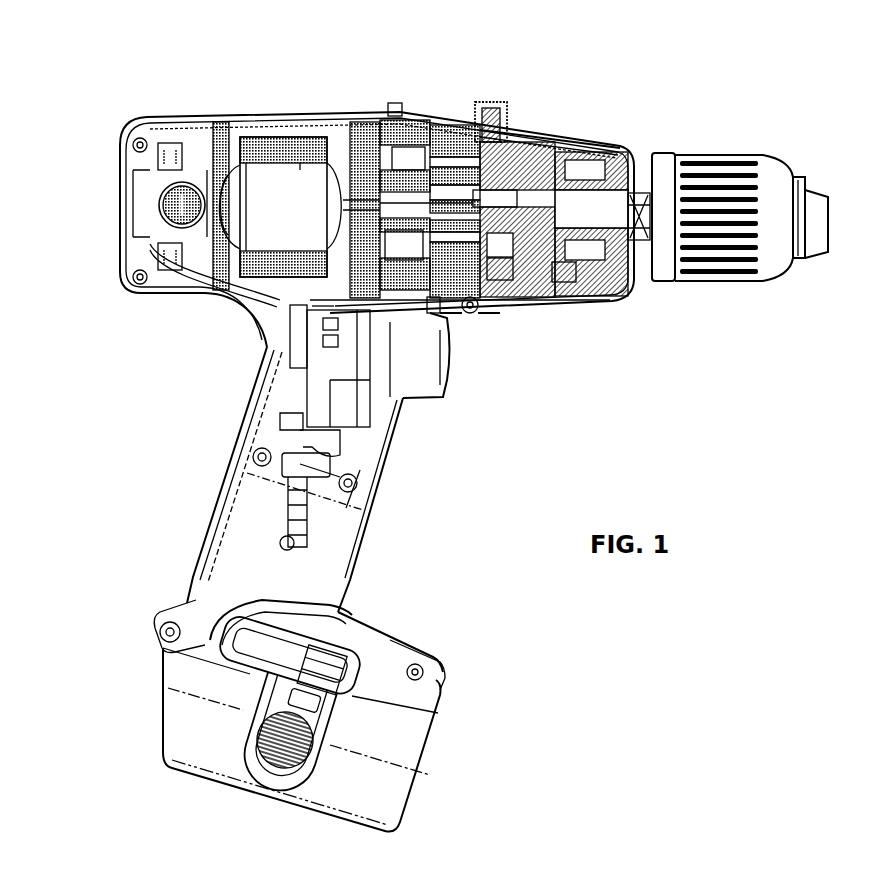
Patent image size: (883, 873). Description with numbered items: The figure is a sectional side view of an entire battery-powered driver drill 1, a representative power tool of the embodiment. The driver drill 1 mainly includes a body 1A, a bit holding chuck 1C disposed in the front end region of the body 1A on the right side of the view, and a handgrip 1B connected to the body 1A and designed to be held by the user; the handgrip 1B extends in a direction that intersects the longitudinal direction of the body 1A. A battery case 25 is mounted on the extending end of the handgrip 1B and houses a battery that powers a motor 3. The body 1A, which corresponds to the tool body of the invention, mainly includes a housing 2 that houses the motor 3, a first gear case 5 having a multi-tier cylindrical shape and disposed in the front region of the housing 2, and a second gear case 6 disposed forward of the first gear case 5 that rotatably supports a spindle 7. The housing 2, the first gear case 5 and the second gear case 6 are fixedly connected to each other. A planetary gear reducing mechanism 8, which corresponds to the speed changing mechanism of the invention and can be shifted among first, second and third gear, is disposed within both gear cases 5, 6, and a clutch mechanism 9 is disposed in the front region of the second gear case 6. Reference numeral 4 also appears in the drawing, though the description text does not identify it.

The driver drill 1 is at (660, 122).
The body 1A is at (438, 113).
The handgrip 1B is at (218, 481).
The bit holding chuck 1C is at (740, 153).
The housing 2 is at (255, 108).
The motor 3 is at (300, 137).
The speed reduction mechanism 4 is at (363, 133).
The first gear case 5 is at (482, 102).
The second gear case 6 is at (537, 130).
The spindle 7 is at (593, 205).
The planetary gear reducing mechanism 8 is at (498, 262).
The clutch mechanism 9 is at (562, 270).
The battery case 25 is at (163, 722).